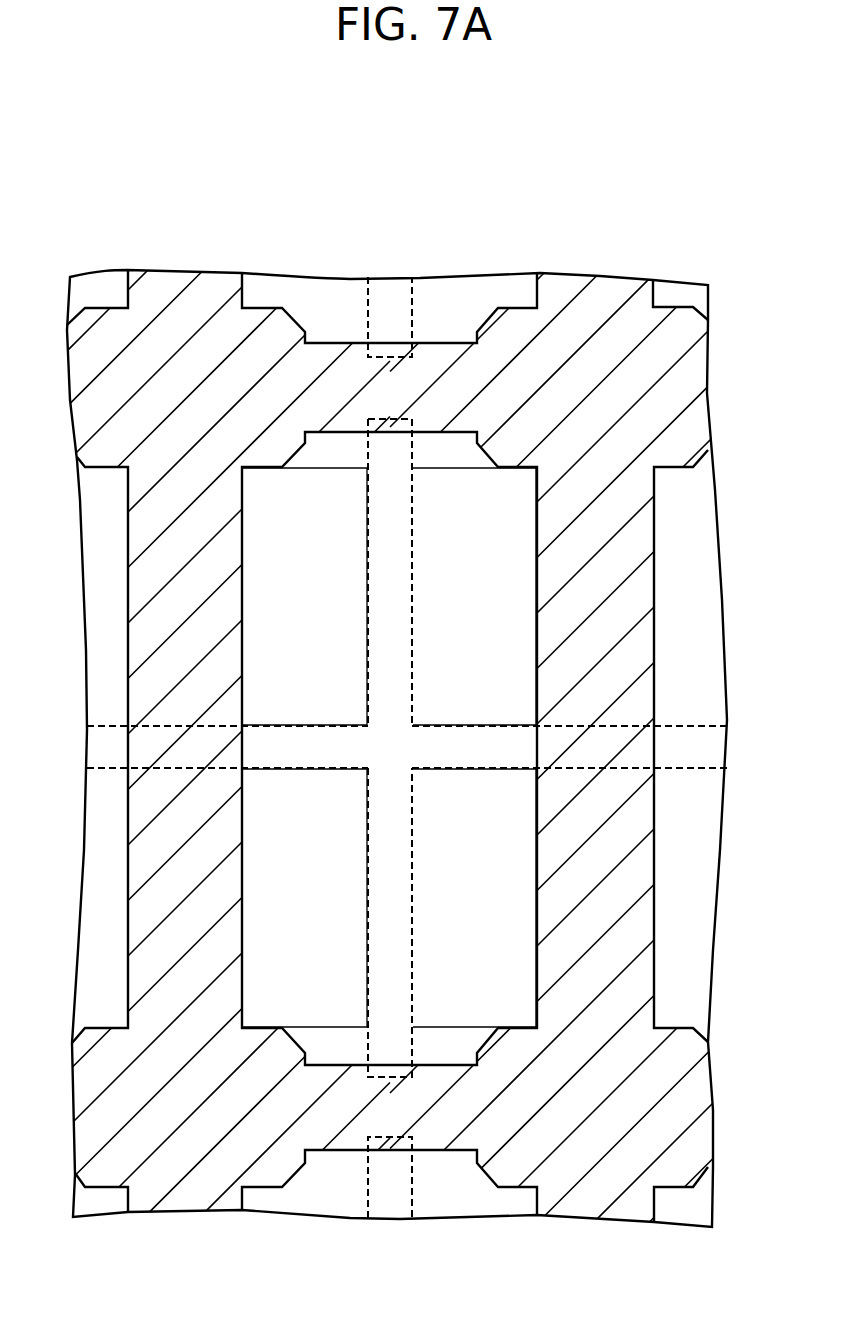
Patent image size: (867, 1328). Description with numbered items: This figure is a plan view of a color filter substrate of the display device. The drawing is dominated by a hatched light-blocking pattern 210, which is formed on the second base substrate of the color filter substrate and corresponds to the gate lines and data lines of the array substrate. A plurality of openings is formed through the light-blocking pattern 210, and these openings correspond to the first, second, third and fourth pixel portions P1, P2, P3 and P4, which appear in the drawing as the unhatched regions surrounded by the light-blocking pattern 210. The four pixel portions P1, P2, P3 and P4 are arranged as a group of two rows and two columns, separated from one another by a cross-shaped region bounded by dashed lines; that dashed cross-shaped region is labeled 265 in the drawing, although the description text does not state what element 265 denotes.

The light-blocking pattern 210 is at (708, 397).
The deep trench isolation pattern 265 is at (413, 622).
The first pixel portion P1 is at (312, 592).
The second pixel portion P2 is at (492, 592).
The third pixel portion P3 is at (312, 930).
The fourth pixel portion P4 is at (492, 930).